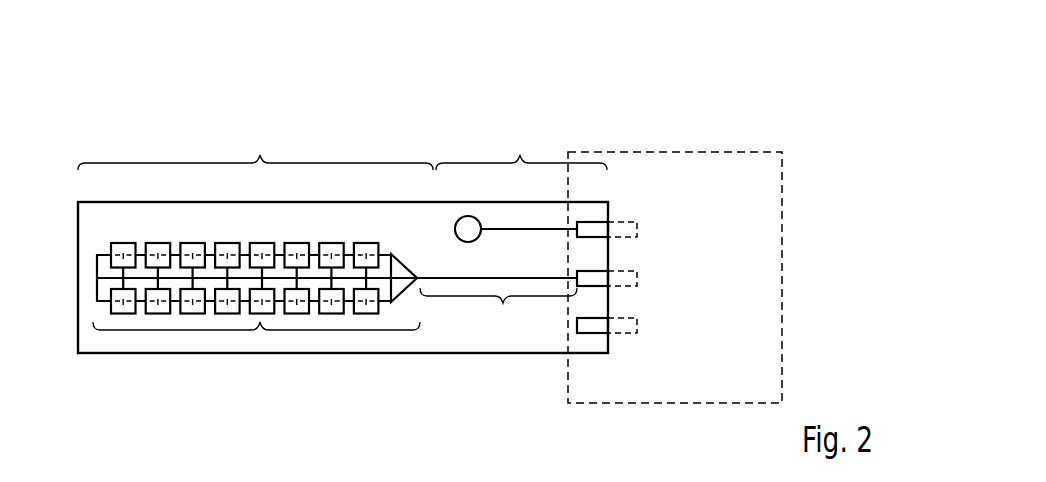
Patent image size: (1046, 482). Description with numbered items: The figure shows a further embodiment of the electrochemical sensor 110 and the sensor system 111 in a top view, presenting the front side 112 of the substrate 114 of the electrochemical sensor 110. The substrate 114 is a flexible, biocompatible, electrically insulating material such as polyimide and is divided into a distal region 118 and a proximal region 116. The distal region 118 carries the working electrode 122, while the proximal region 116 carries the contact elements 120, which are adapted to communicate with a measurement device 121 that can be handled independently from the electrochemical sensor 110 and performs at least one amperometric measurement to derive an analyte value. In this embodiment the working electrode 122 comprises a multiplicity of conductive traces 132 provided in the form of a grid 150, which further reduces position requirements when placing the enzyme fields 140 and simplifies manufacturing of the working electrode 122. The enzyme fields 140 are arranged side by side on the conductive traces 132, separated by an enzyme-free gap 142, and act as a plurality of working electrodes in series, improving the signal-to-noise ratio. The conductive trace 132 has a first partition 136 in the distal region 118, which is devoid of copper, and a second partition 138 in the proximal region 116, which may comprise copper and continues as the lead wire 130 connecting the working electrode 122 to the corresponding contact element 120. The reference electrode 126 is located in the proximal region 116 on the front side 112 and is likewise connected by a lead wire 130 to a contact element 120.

The electrochemical sensor 110 is at (111, 139).
The sensor system 111 is at (799, 126).
The front side 112 is at (108, 337).
The substrate 114 is at (343, 313).
The proximal region 116 is at (520, 155).
The distal region 118 is at (260, 155).
The contact elements 120 is at (622, 327).
The measurement device 121 is at (747, 295).
The working electrode 122 is at (446, 340).
The reference electrode 126 is at (455, 229).
The lead wire 130 is at (558, 229).
The conductive trace 132 is at (387, 300).
The first partition 136 is at (256, 297).
The second partition 138 is at (503, 303).
The enzyme fields 140 is at (160, 243).
The gap 142 is at (212, 245).
The grid 150 is at (260, 332).